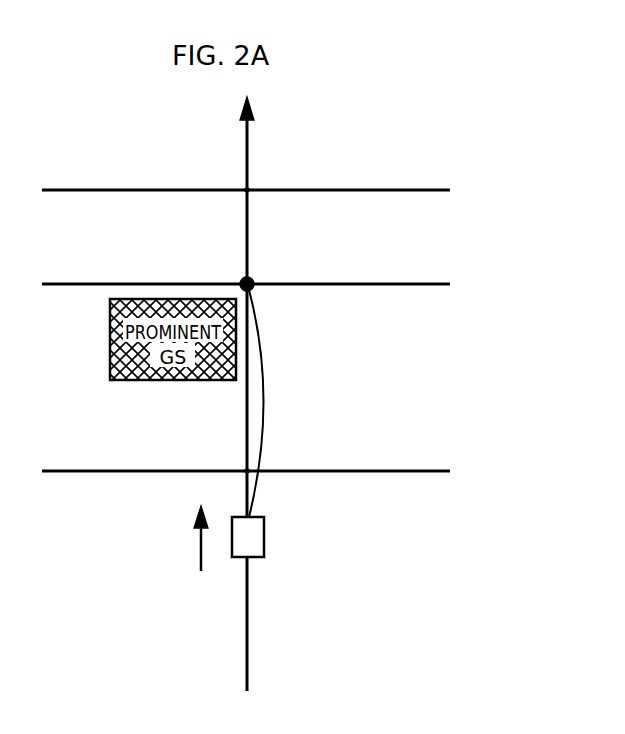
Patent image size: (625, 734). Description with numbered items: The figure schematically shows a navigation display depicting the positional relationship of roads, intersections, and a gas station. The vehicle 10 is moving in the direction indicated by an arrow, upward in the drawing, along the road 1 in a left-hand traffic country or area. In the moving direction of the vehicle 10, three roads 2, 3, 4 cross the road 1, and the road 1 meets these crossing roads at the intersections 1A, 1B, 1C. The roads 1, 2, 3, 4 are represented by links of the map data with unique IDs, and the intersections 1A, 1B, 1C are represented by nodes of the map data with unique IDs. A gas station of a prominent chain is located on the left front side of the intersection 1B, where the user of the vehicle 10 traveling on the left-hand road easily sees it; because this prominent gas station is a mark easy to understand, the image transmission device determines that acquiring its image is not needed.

The road 1 is at (249, 642).
The intersection 1A is at (247, 470).
The intersection 1B is at (253, 283).
The intersection 1C is at (248, 189).
The road 2 is at (60, 473).
The road 3 is at (55, 286).
The road 4 is at (58, 192).
The vehicle 10 is at (265, 537).